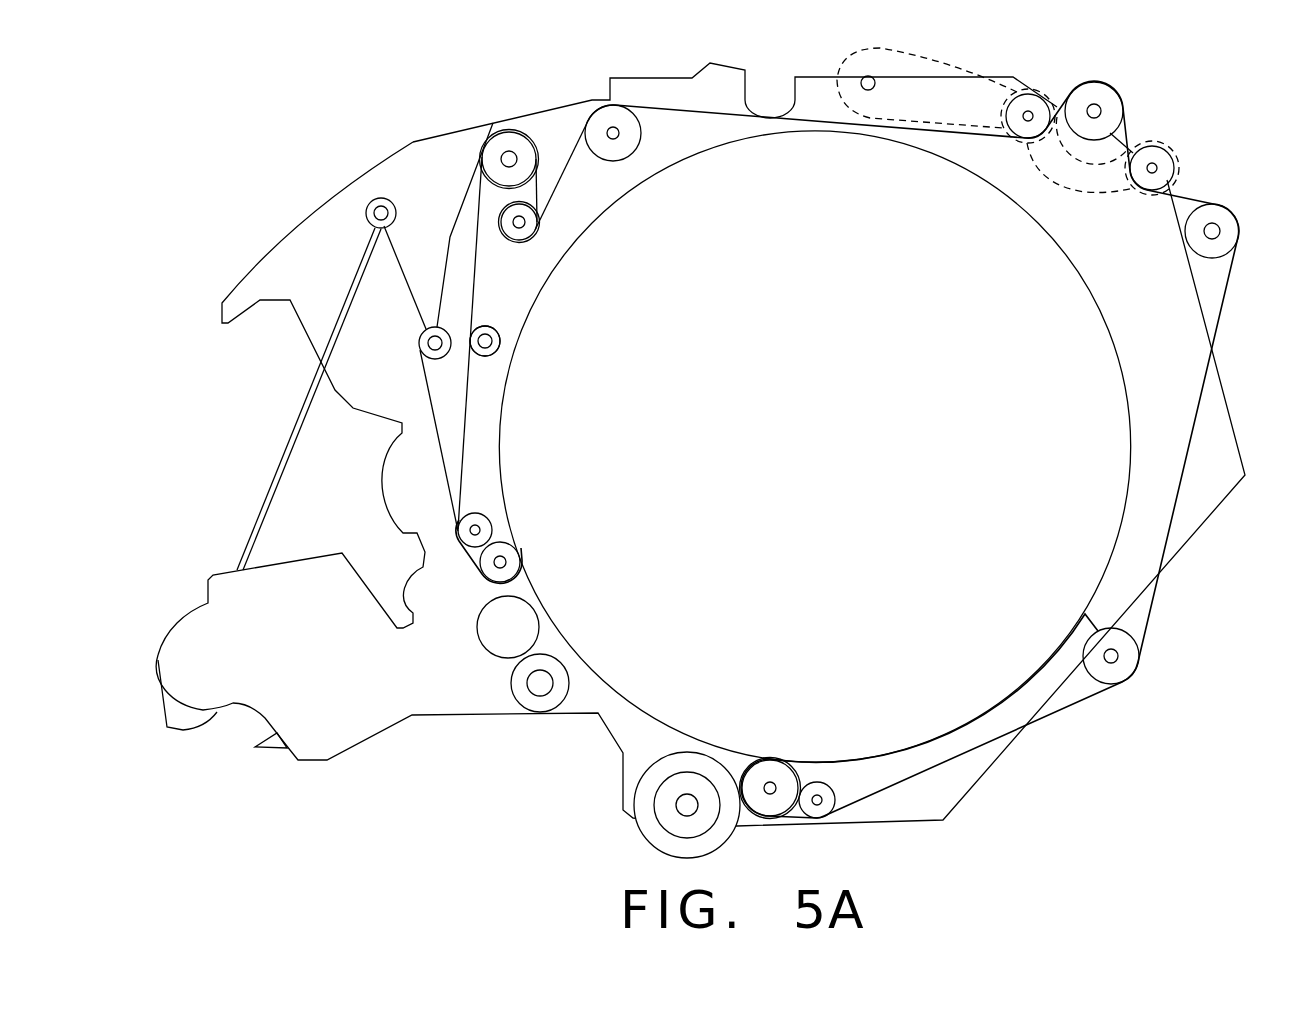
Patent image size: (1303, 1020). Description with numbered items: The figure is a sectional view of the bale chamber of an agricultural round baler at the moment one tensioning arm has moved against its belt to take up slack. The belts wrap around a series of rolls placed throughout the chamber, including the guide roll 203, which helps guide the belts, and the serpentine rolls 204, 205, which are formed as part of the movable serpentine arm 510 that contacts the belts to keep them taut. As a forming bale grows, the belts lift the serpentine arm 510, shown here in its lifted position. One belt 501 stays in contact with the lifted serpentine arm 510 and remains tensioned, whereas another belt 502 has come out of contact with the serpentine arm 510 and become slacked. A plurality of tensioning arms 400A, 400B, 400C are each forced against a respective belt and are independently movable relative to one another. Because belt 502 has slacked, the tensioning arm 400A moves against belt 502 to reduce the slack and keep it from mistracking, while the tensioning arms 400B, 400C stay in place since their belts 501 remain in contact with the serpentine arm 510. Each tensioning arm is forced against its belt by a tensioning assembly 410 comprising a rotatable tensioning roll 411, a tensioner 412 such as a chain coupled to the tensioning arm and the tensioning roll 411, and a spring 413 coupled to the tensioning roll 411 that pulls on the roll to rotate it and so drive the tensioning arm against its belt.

The guide roll 203 is at (510, 150).
The serpentine roll 204 is at (1028, 110).
The serpentine roll 205 is at (1156, 164).
The serpentine arm 510 is at (908, 55).
The belt 501 is at (473, 272).
The belt 502 is at (450, 237).
The tensioning arm 400A is at (418, 345).
The tensioning arm 400B is at (500, 341).
The tensioning arm 400C is at (505, 338).
The tensioning assembly 410 is at (344, 327).
The tensioning roll 411 is at (371, 205).
The tensioner 412 is at (413, 293).
The spring 413 is at (355, 277).